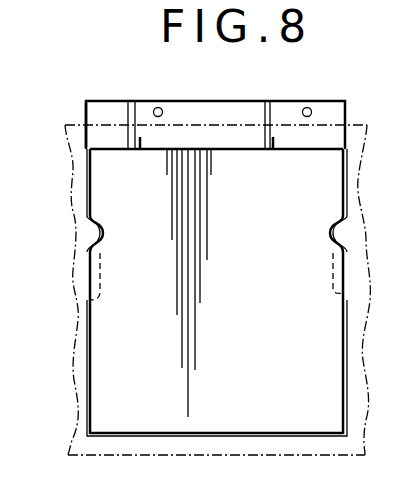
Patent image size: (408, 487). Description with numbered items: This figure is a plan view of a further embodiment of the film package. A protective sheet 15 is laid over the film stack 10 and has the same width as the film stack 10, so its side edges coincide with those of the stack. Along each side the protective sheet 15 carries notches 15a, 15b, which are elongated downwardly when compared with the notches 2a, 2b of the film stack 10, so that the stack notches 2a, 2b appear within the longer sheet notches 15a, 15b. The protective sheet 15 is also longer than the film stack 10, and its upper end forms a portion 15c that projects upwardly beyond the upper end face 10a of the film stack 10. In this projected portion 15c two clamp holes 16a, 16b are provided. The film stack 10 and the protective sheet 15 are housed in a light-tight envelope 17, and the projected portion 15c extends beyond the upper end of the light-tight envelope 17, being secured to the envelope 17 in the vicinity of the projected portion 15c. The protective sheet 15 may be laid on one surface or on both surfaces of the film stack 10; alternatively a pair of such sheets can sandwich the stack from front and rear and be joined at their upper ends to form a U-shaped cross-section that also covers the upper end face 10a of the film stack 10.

The film stack 10 is at (309, 408).
The upper end face of the film stack 10a is at (102, 143).
The protective sheet 15 is at (330, 140).
The notch of the protective sheet 15a is at (97, 232).
The notch of the protective sheet 15b is at (332, 236).
The projected portion 15c is at (327, 107).
The clamp hole 16a is at (158, 107).
The clamp hole 16b is at (307, 107).
The light-tight envelope 17 is at (350, 318).
The notch of the film stack 2a is at (104, 236).
The notch of the film stack 2b is at (325, 236).